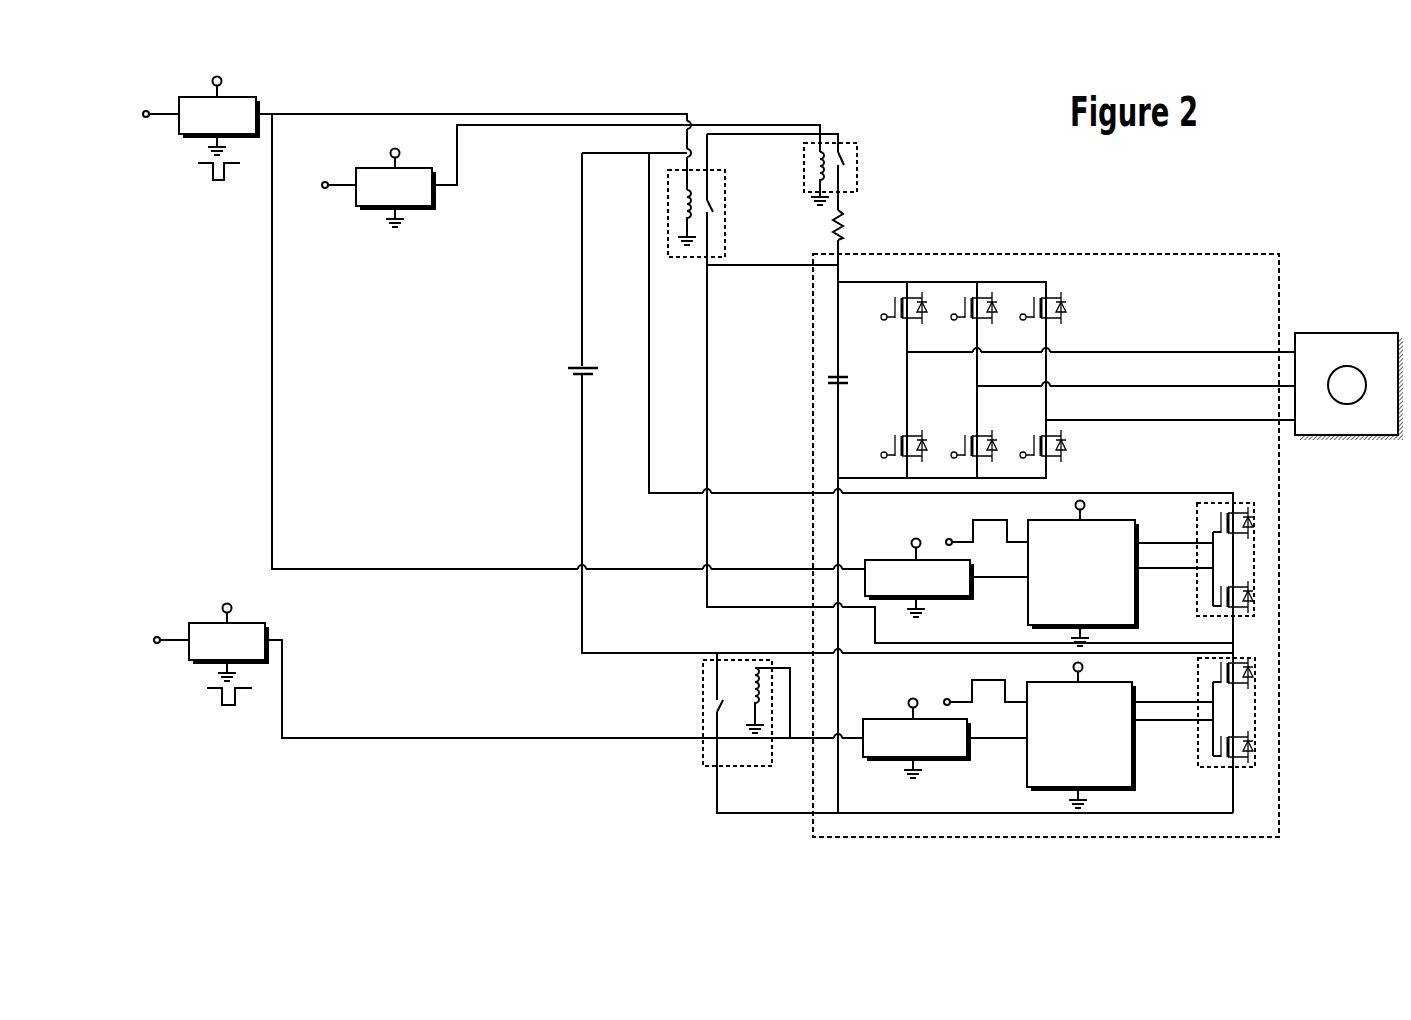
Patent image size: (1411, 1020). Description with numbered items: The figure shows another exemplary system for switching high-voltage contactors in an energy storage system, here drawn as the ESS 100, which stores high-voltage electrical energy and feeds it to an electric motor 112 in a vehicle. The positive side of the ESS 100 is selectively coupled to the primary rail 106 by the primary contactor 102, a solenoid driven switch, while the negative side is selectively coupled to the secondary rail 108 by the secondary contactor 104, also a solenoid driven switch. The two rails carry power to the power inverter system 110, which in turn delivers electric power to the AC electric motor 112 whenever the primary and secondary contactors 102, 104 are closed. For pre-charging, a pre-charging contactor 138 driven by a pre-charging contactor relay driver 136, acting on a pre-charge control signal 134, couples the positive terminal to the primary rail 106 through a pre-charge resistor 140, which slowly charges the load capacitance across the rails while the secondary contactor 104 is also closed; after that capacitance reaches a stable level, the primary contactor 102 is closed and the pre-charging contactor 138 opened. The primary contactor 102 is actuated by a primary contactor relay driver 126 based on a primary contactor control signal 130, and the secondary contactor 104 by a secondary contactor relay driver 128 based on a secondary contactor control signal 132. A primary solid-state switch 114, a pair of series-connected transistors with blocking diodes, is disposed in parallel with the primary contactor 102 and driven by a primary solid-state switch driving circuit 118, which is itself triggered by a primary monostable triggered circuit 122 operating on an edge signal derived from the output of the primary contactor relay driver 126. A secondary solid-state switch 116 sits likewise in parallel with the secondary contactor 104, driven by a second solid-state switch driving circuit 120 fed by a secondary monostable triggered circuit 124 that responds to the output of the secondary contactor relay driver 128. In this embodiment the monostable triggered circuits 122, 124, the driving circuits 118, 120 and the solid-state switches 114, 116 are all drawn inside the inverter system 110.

The ESS 100 is at (582, 369).
The primary contactor 102 is at (725, 207).
The secondary contactor 104 is at (708, 748).
The primary rail 106 is at (838, 282).
The secondary rail 108 is at (838, 478).
The power inverter system 110 is at (990, 254).
The electric motor 112 is at (1362, 437).
The primary solid-state switch 114 is at (1197, 577).
The secondary solid-state switch 116 is at (1198, 730).
The primary solid-state switch driving circuit 118 is at (1079, 571).
The second solid-state switch driving circuit 120 is at (1078, 733).
The primary monostable triggered circuit 122 is at (946, 568).
The secondary monostable triggered circuit 124 is at (945, 729).
The primary contactor relay driver 126 is at (219, 119).
The secondary contactor relay driver 128 is at (229, 645).
The primary contactor control signal 130 is at (142, 114).
The secondary contactor control signal 132 is at (153, 640).
The pre-charge control signal 134 is at (320, 185).
The pre-charging contactor relay driver 136 is at (396, 178).
The pre-charging contactor 138 is at (857, 160).
The pre-charge resistor 140 is at (845, 220).